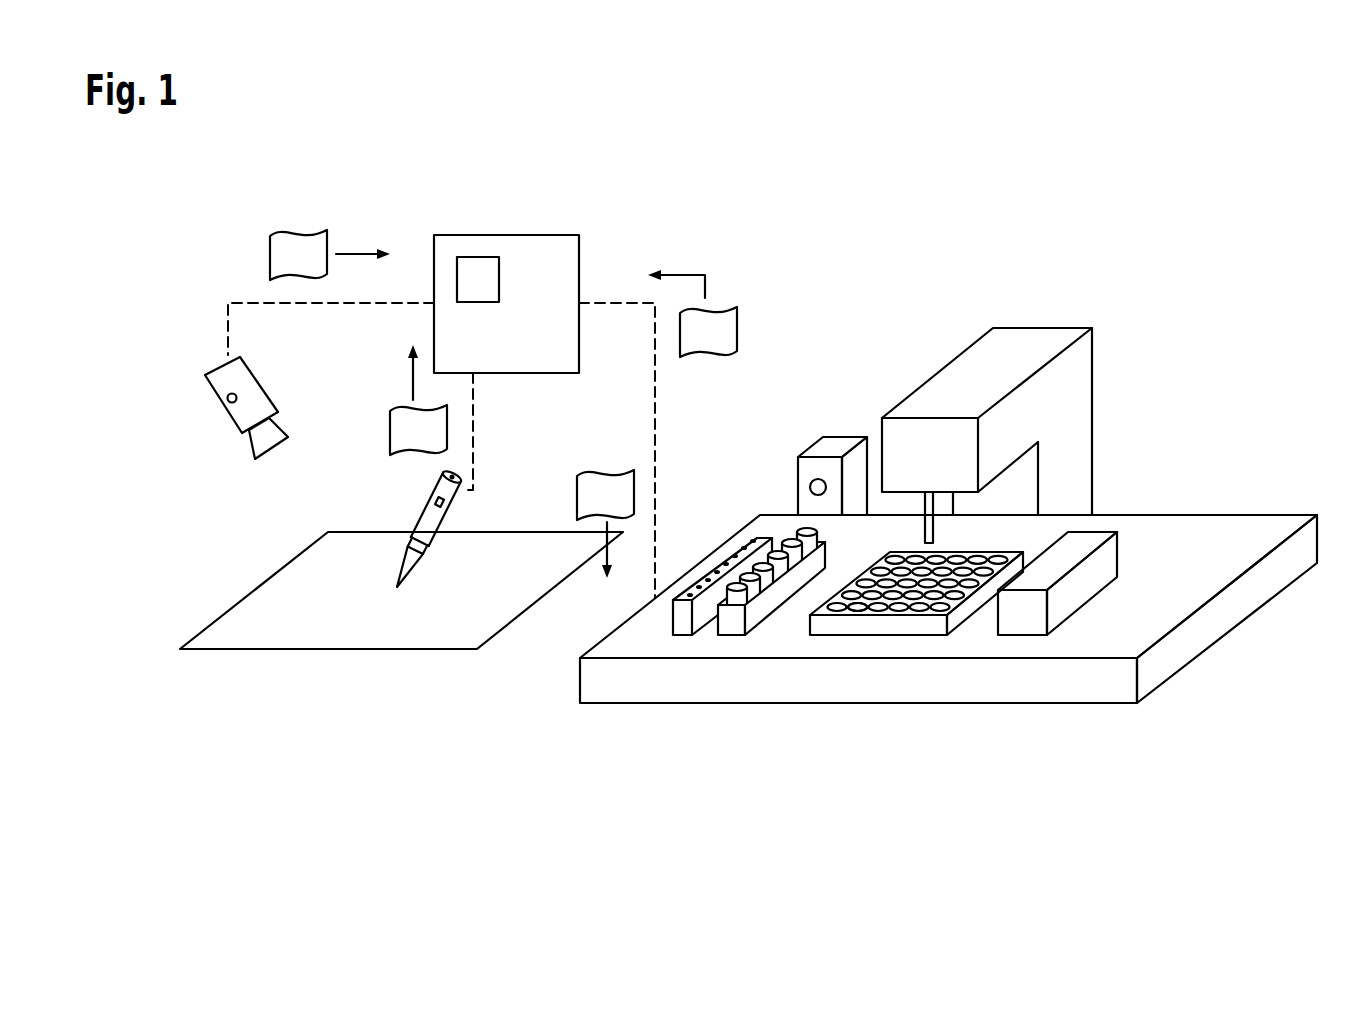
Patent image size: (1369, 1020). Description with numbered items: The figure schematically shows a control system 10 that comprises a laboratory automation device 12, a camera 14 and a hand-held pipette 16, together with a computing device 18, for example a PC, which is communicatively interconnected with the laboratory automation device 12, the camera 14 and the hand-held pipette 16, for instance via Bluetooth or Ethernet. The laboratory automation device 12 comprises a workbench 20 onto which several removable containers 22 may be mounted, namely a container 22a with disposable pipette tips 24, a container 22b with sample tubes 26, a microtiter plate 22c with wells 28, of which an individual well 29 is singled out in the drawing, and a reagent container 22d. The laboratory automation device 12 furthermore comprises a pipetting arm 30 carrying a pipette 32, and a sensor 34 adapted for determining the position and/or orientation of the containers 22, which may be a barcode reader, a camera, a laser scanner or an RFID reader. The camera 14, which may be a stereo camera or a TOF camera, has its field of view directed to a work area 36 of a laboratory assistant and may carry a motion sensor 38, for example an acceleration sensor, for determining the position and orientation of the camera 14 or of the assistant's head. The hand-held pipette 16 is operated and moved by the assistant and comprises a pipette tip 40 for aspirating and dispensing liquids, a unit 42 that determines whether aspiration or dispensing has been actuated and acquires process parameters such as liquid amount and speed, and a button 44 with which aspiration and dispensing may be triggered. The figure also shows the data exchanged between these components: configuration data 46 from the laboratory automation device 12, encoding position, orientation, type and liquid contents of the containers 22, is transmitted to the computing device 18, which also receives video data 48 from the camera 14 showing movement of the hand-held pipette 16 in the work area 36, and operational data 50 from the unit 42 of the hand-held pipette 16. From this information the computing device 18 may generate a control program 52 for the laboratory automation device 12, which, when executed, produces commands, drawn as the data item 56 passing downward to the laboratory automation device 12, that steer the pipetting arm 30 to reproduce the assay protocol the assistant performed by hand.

The control system 10 is at (1140, 152).
The laboratory automation device 12 is at (1165, 312).
The camera 14 is at (234, 422).
The hand-held pipette 16 is at (419, 519).
The computing device 18 is at (537, 235).
The workbench 20 is at (1093, 685).
The removable containers 22 is at (1148, 530).
The container with disposable pipette tips 22a is at (680, 637).
The container with sample tubes 22b is at (771, 628).
The microtiter plate 22c is at (915, 676).
The reagent container 22d is at (1020, 637).
The disposable pipette tips 24 is at (742, 545).
The sample tubes 26 is at (792, 535).
The wells 28 is at (893, 597).
The well 29 is at (858, 610).
The pipetting arm 30 is at (1082, 387).
The pipette 32 is at (925, 532).
The sensor 34 is at (843, 437).
The work area 36 is at (283, 649).
The motion sensor 38 is at (227, 400).
The pipette tip 40 is at (397, 587).
The unit 42 is at (430, 498).
The button 44 is at (455, 476).
The configuration data 46 is at (705, 353).
The video data 48 is at (297, 232).
The operational data 50 is at (390, 425).
The control program 52 is at (481, 257).
The command data 56 is at (607, 470).